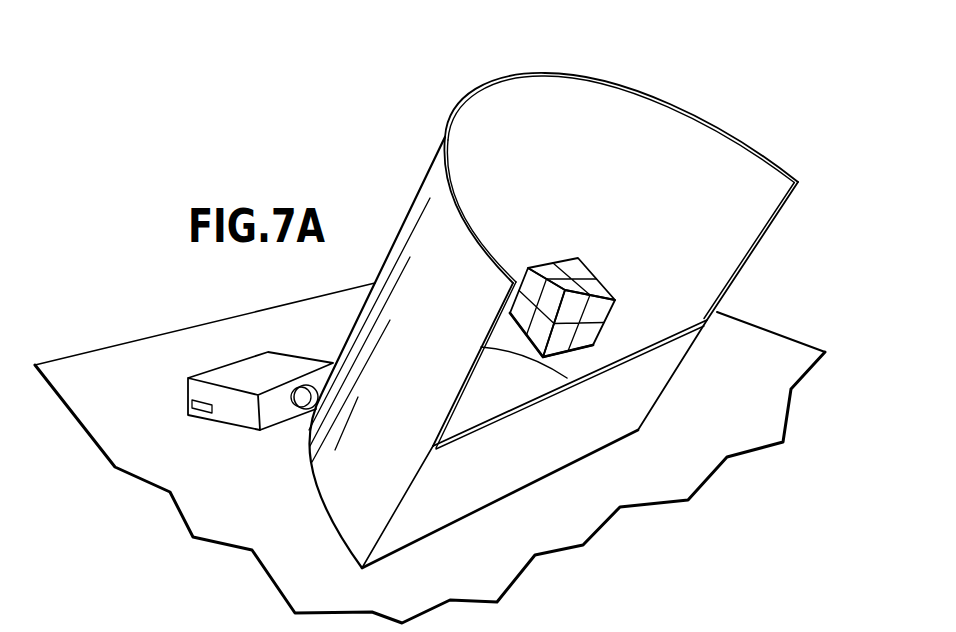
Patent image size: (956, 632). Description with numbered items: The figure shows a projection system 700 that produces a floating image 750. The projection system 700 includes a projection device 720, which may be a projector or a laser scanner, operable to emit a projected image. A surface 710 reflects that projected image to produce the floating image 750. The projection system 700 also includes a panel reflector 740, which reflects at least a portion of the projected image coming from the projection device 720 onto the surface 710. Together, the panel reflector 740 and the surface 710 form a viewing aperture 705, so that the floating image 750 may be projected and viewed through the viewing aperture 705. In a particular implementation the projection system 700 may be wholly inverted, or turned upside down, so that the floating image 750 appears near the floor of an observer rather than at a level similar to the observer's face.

The projection system 700 is at (368, 121).
The viewing aperture 705 is at (718, 263).
The surface 710 is at (595, 78).
The projection device 720 is at (186, 398).
The panel reflector 740 is at (645, 375).
The floating image 750 is at (578, 256).